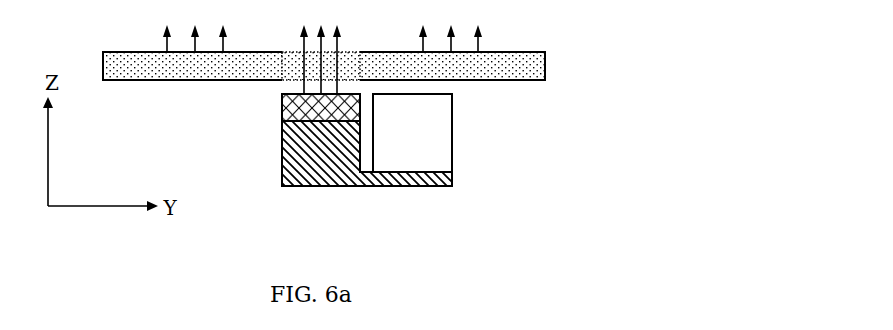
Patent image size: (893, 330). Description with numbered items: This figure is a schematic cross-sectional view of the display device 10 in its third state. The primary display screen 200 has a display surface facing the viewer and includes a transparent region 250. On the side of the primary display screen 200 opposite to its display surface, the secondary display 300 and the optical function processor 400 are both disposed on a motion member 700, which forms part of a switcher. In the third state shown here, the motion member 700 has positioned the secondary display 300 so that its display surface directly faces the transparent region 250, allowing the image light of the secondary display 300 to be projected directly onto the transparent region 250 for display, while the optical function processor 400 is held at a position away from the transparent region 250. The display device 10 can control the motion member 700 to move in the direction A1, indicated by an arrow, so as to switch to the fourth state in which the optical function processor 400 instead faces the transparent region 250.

The display device 10 is at (334, 242).
The primary display screen 200 is at (507, 51).
The transparent region 250 is at (352, 57).
The secondary display 300 is at (290, 105).
The optical function processor 400 is at (437, 128).
The motion member 700 is at (293, 126).
The direction A1 is at (282, 177).